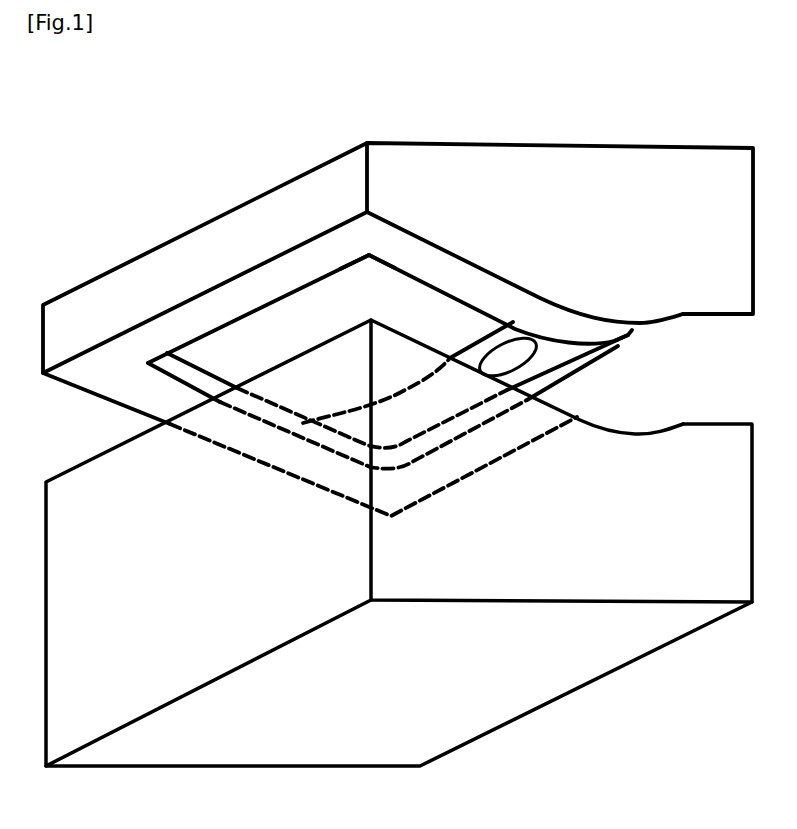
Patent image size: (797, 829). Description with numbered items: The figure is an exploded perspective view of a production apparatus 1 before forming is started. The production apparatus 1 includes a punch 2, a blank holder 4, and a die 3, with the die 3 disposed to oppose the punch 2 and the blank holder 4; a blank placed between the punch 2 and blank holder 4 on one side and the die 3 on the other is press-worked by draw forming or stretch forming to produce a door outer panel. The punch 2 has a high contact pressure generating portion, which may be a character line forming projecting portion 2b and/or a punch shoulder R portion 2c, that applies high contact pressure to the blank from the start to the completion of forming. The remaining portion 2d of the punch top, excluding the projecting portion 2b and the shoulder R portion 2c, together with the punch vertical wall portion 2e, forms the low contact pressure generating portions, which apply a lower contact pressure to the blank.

The production apparatus 1 is at (618, 125).
The punch 2 is at (358, 300).
The character line forming projecting portion 2b is at (477, 338).
The punch shoulder R portion 2c is at (273, 300).
The remaining portion of the punch top portion 2d is at (412, 275).
The punch vertical wall portion 2e is at (348, 250).
The die 3 is at (538, 685).
The blank holder 4 is at (200, 257).